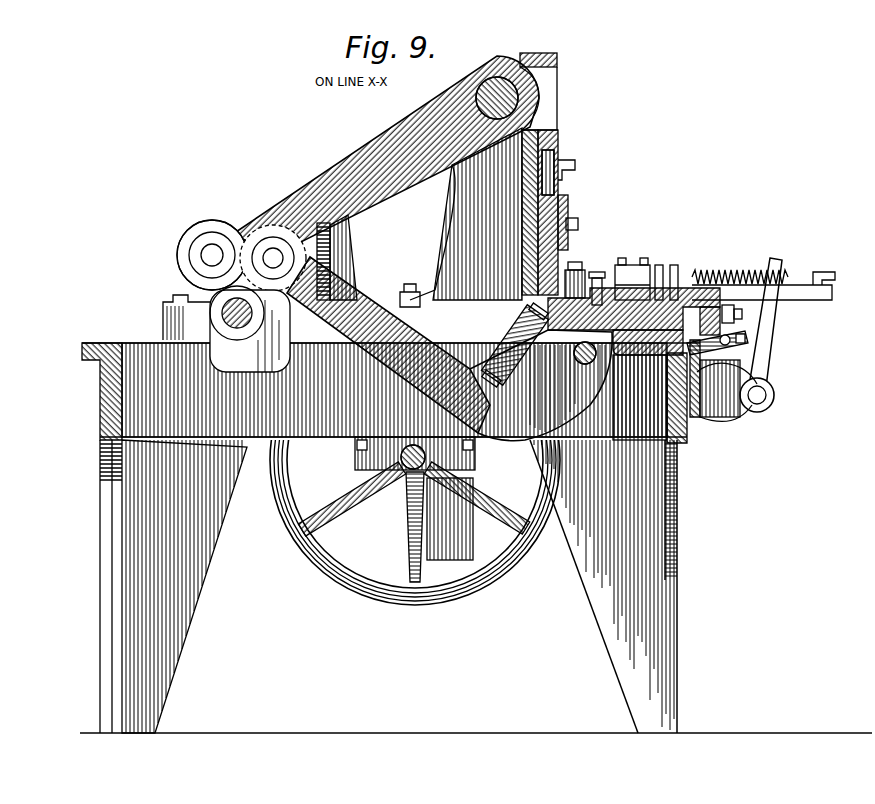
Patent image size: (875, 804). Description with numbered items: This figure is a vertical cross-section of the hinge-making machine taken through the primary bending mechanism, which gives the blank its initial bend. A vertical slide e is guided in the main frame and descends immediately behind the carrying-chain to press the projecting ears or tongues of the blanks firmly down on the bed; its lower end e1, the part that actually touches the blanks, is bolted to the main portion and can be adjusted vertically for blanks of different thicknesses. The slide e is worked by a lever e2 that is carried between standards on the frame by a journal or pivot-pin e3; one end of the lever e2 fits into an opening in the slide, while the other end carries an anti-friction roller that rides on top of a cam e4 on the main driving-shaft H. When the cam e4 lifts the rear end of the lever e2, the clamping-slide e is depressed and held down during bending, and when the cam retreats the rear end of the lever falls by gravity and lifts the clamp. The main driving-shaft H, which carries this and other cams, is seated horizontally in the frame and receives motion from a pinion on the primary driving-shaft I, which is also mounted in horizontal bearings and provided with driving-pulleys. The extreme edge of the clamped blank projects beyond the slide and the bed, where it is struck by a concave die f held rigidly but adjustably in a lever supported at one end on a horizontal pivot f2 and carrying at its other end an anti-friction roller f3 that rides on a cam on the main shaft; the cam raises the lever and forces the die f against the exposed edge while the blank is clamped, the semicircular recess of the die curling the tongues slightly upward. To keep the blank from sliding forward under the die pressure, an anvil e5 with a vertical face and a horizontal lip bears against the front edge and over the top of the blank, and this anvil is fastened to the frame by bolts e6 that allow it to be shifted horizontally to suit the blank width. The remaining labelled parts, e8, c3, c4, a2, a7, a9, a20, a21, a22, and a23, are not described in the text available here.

The primary driving-shaft I is at (395, 482).
The main driving-shaft H is at (225, 309).
The vertical slide e is at (522, 214).
The lower end of the slide e1 is at (566, 172).
The lever e2 is at (384, 153).
The journal or pivot-pin e3 is at (497, 77).
The cam e4 is at (213, 281).
The anvil e5 is at (598, 283).
The bolts e6 is at (677, 270).
The block e8 is at (634, 314).
The concave die f is at (404, 386).
The horizontal pivot f2 is at (583, 365).
The anti-friction roller f3 is at (290, 238).
The bar c3 is at (345, 250).
The pin hub c4 is at (250, 329).
The plate a2 is at (578, 298).
The rod a7 is at (808, 288).
The spring a9 is at (762, 276).
The lever a20 is at (766, 333).
The pivot a21 is at (771, 398).
The pin a22 is at (737, 344).
The link a23 is at (721, 345).